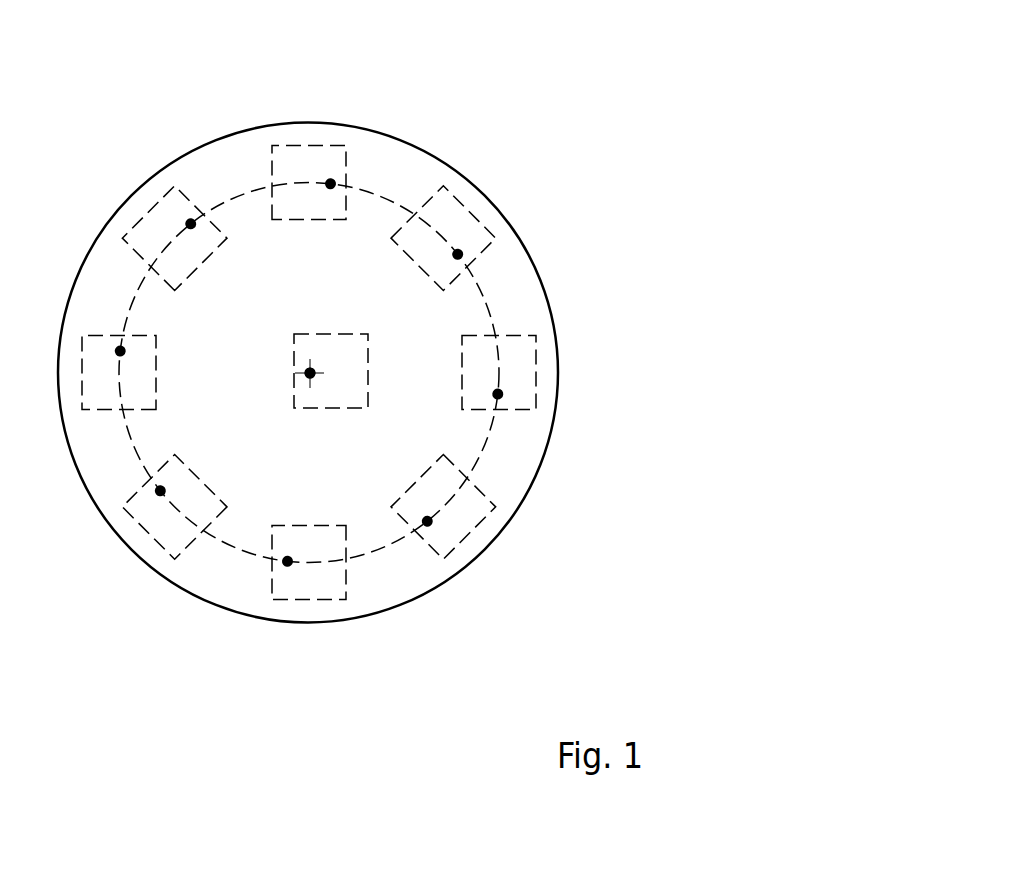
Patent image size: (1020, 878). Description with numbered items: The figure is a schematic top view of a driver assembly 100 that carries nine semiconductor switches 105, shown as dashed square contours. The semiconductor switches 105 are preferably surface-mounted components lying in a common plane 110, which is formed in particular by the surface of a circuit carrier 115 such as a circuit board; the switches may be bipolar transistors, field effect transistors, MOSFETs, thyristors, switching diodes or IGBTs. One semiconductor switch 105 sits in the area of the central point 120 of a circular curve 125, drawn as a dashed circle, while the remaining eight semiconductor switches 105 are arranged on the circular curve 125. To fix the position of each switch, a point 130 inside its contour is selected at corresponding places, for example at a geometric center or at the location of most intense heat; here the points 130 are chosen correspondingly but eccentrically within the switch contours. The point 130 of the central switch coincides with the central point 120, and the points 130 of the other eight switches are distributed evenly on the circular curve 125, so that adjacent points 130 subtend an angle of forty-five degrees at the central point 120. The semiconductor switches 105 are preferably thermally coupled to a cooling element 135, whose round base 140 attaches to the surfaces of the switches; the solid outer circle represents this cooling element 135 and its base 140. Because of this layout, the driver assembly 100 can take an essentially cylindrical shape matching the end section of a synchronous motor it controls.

The driver assembly 100 is at (198, 133).
The semiconductor switches 105 is at (300, 147).
The plane 110 is at (488, 148).
The circuit carrier 115 is at (601, 32).
The central point 120 is at (320, 382).
The circular curve 125 is at (322, 333).
The point 130 is at (333, 181).
The cooling element 135 is at (252, 127).
The round base 140 is at (543, 484).